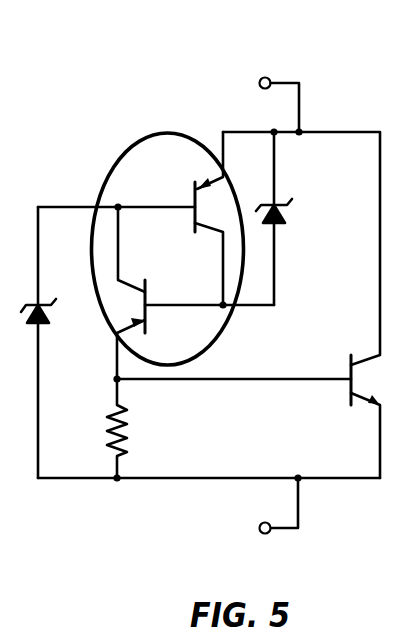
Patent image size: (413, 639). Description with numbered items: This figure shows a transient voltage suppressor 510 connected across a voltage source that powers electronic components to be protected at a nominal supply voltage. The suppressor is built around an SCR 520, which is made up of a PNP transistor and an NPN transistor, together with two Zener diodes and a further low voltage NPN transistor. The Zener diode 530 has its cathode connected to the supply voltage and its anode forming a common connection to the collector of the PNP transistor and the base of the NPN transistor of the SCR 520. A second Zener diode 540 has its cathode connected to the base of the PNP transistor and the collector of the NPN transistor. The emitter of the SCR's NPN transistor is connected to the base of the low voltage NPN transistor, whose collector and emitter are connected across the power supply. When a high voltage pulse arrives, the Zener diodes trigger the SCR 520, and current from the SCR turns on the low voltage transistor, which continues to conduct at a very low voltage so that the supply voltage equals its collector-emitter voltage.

The transient voltage suppressor 510 is at (131, 92).
The SCR 520 is at (125, 152).
The Zener diode 530 is at (289, 223).
The second Zener diode 540 is at (47, 319).